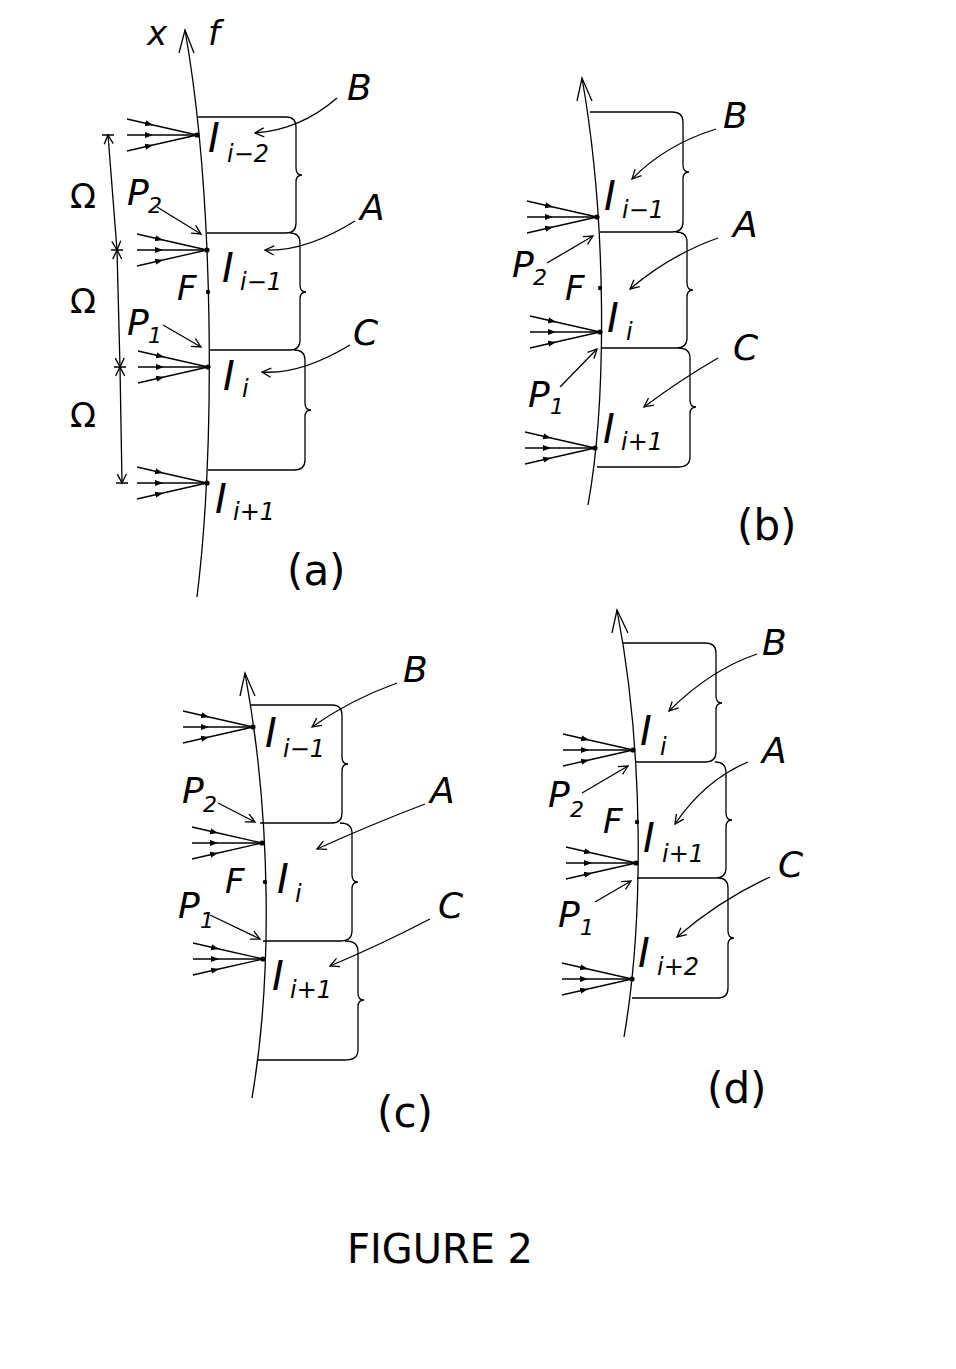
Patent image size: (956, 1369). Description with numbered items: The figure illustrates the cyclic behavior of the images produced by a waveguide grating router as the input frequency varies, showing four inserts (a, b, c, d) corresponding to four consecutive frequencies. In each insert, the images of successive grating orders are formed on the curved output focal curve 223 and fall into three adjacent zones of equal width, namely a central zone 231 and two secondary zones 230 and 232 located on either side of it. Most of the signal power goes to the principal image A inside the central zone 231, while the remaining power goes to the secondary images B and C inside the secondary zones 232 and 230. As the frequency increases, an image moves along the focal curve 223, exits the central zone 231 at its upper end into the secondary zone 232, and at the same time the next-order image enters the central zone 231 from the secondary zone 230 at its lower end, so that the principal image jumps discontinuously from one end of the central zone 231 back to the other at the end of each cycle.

The output focal curve 223 is at (196, 546).
The secondary zone 230 is at (505, 704).
The central zone 231 is at (503, 586).
The secondary zone 232 is at (492, 467).